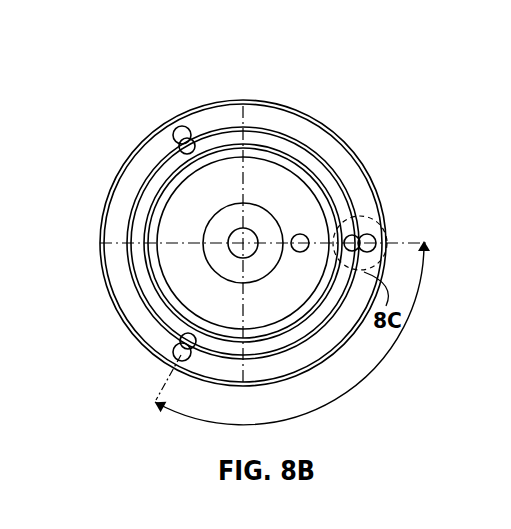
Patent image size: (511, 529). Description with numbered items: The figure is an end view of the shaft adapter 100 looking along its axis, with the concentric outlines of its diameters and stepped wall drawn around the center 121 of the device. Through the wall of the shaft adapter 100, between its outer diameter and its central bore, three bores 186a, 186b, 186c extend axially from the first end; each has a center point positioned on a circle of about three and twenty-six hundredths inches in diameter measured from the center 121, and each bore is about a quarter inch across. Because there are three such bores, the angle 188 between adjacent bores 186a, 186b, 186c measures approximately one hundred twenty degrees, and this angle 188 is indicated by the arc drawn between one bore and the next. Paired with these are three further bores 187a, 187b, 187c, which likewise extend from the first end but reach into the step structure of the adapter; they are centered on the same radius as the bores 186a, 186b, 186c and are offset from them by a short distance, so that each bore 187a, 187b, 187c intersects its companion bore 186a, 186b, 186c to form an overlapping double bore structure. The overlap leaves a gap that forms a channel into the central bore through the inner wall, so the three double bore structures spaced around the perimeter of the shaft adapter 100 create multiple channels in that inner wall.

The shaft adapter 100 is at (92, 58).
The center 121 is at (238, 240).
The bore 186a is at (180, 126).
The bore 186b is at (174, 353).
The bore 186c is at (374, 239).
The bore 187a is at (196, 140).
The bore 187b is at (357, 237).
The bore 187c is at (194, 349).
The angle 188 is at (292, 333).